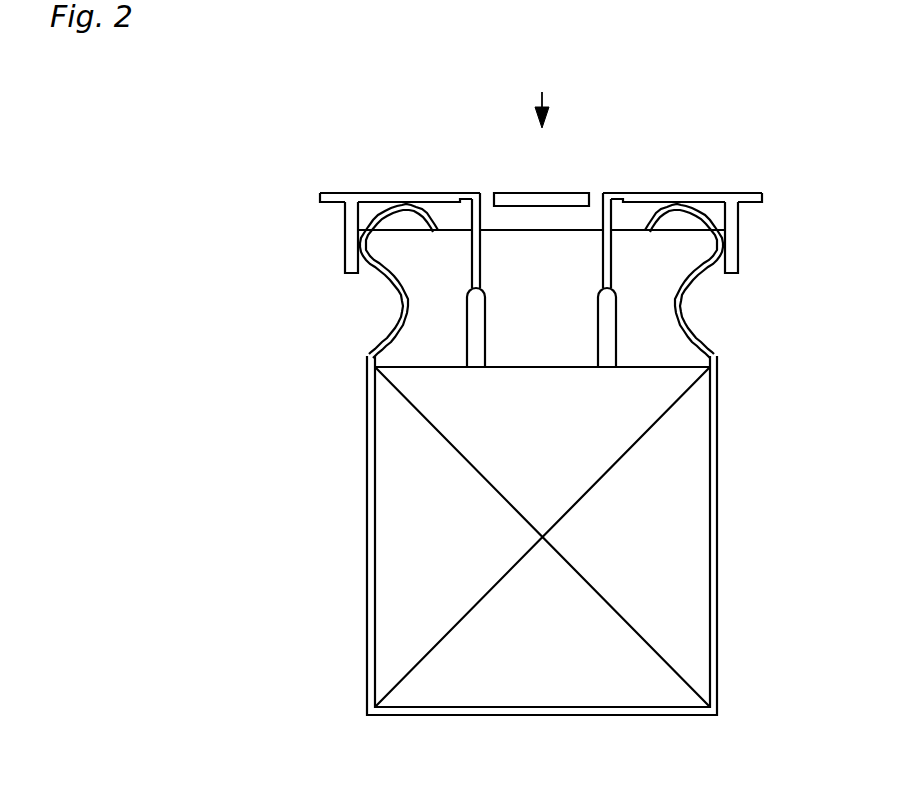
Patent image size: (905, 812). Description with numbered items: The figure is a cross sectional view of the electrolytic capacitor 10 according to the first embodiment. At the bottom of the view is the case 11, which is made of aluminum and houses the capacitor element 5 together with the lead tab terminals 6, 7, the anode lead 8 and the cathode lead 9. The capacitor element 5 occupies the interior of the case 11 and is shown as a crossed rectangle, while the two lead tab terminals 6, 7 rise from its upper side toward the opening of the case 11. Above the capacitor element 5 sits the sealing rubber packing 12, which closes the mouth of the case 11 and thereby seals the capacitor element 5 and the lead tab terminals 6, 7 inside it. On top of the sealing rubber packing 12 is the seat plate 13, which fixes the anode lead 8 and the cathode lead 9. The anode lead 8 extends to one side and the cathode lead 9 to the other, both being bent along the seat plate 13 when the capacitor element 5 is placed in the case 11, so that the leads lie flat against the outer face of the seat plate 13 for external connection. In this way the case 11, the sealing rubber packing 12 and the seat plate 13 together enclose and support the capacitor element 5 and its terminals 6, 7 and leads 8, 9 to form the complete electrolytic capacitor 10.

The electrolytic capacitor 10 is at (554, 41).
The capacitor element 5 is at (390, 538).
The lead tab terminal 6 is at (467, 331).
The lead tab terminal 7 is at (616, 325).
The anode lead 8 is at (320, 193).
The cathode lead 9 is at (762, 195).
The case 11 is at (710, 524).
The sealing rubber packing 12 is at (650, 280).
The seat plate 13 is at (351, 232).